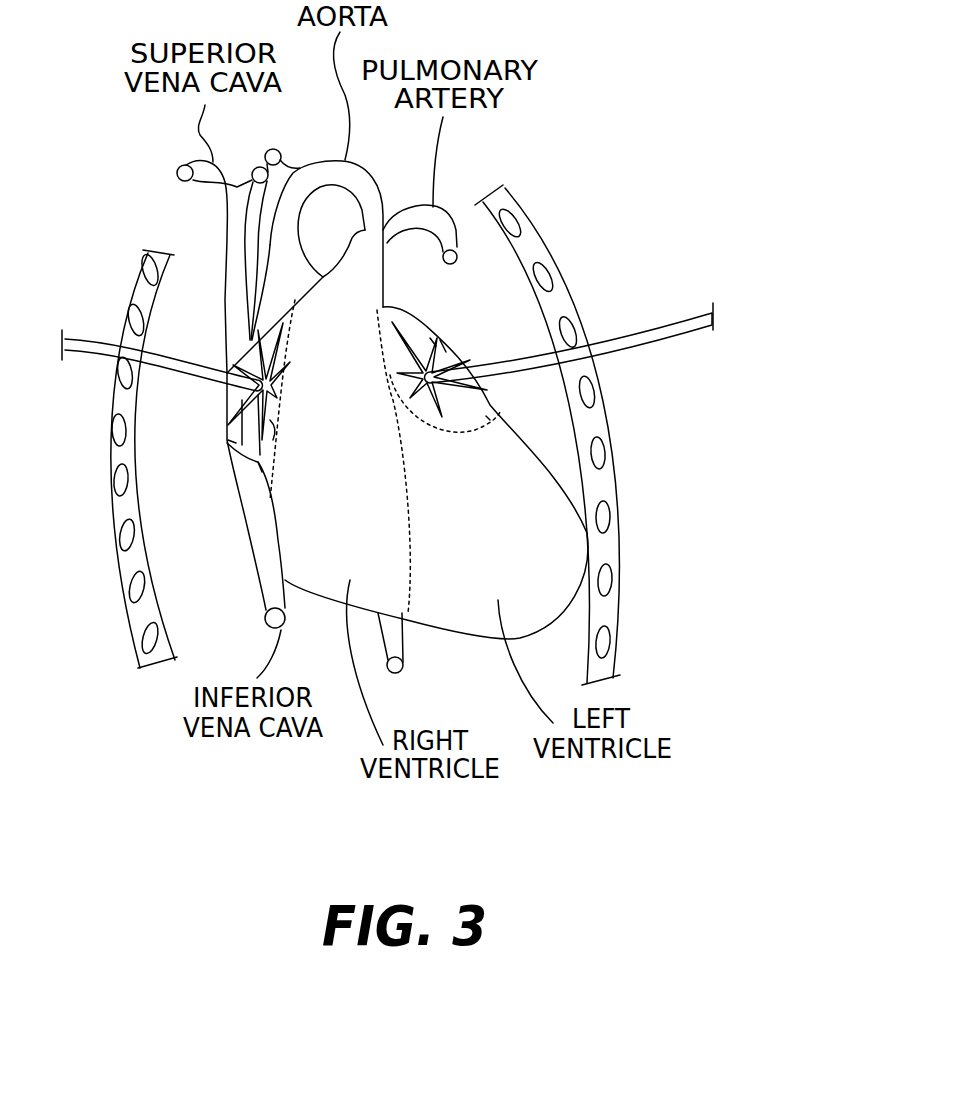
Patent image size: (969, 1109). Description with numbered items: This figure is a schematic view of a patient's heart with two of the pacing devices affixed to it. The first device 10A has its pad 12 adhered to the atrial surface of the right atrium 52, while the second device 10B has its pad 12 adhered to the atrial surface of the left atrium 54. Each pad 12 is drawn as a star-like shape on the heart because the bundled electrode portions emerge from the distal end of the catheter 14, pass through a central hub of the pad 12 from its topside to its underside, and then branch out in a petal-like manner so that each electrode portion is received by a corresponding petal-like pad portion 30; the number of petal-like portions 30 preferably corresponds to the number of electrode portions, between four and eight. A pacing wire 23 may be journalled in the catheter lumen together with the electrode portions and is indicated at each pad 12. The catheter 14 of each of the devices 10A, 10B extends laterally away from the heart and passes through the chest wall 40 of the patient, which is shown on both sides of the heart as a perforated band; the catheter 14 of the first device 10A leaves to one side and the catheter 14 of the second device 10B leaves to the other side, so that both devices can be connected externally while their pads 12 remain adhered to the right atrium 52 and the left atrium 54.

The first device 10A is at (90, 338).
The second device 10B is at (642, 333).
The pad 12 is at (283, 368).
The catheter 14 is at (375, 341).
The pacing wire 23 is at (260, 472).
The petal-like pad portion 30 is at (273, 427).
The chest wall 40 is at (127, 561).
The right atrium 52 is at (236, 443).
The left atrium 54 is at (487, 417).